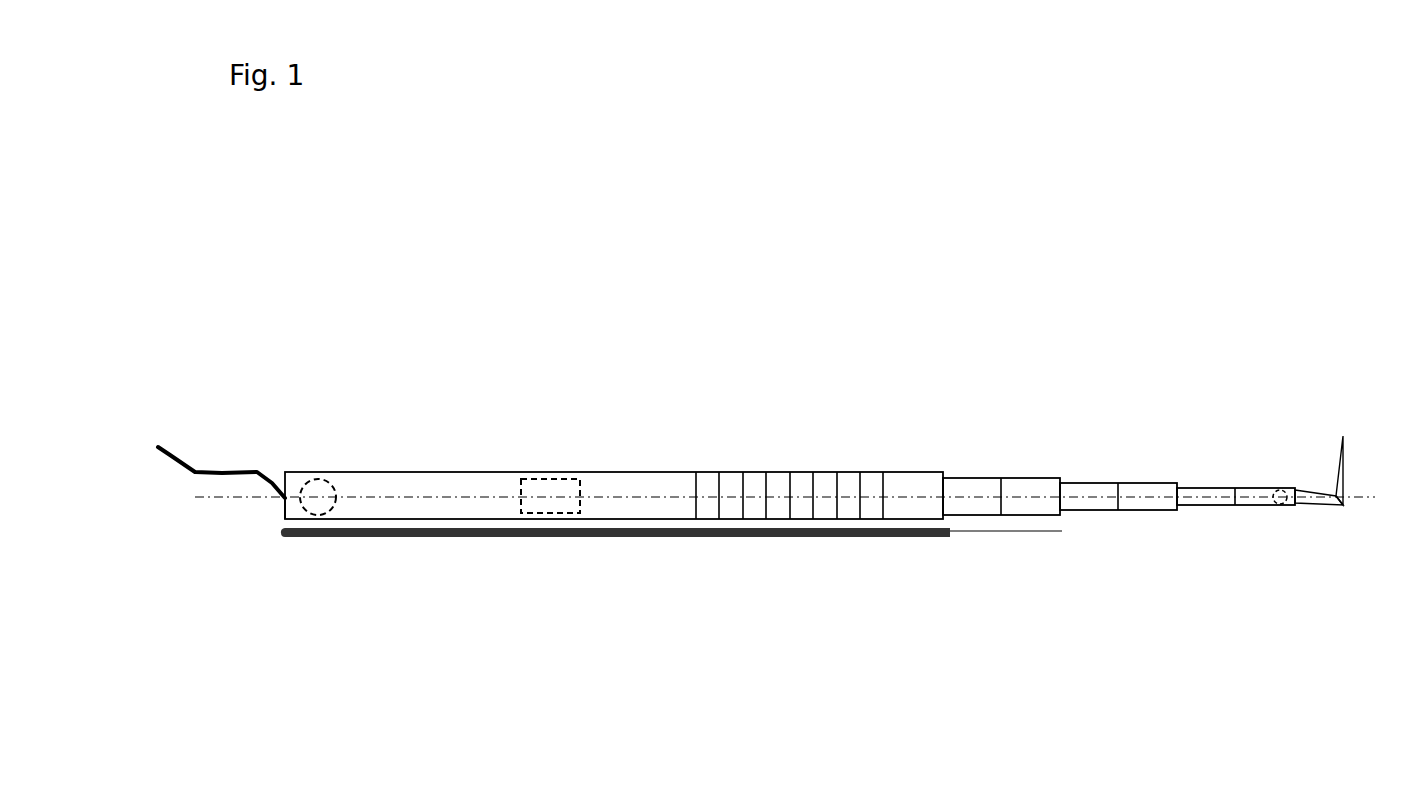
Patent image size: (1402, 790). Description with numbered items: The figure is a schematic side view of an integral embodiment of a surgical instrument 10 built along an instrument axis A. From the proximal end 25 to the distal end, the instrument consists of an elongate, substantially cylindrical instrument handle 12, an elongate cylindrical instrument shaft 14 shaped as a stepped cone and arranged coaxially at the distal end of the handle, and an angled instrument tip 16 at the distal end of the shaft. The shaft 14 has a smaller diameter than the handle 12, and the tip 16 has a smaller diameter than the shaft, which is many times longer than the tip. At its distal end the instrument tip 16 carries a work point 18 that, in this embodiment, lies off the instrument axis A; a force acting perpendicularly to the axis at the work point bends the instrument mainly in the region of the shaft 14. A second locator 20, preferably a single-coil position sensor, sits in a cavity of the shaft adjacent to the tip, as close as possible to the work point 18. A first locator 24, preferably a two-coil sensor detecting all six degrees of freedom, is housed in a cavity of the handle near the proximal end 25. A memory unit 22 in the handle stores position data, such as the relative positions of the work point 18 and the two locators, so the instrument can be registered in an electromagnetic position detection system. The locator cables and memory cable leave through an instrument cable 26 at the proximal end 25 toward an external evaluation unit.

The surgical instrument 10 is at (392, 367).
The instrument handle 12 is at (485, 440).
The instrument shaft 14 is at (978, 413).
The instrument tip 16 is at (1307, 458).
The work point 18 is at (1343, 438).
The second locator 20 is at (1278, 500).
The memory unit 22 is at (545, 502).
The first locator 24 is at (318, 501).
The proximal end 25 is at (286, 506).
The instrument cable 26 is at (242, 473).
The instrument axis A is at (428, 495).